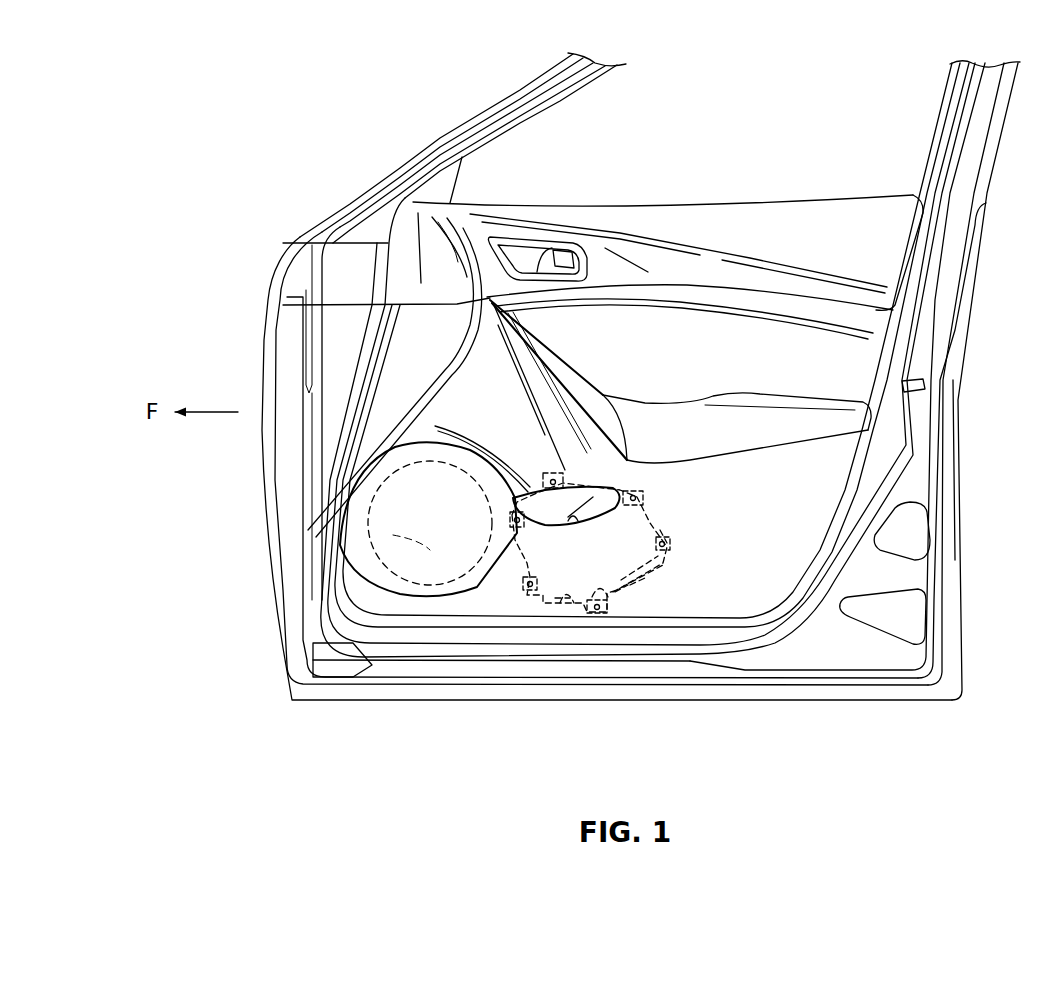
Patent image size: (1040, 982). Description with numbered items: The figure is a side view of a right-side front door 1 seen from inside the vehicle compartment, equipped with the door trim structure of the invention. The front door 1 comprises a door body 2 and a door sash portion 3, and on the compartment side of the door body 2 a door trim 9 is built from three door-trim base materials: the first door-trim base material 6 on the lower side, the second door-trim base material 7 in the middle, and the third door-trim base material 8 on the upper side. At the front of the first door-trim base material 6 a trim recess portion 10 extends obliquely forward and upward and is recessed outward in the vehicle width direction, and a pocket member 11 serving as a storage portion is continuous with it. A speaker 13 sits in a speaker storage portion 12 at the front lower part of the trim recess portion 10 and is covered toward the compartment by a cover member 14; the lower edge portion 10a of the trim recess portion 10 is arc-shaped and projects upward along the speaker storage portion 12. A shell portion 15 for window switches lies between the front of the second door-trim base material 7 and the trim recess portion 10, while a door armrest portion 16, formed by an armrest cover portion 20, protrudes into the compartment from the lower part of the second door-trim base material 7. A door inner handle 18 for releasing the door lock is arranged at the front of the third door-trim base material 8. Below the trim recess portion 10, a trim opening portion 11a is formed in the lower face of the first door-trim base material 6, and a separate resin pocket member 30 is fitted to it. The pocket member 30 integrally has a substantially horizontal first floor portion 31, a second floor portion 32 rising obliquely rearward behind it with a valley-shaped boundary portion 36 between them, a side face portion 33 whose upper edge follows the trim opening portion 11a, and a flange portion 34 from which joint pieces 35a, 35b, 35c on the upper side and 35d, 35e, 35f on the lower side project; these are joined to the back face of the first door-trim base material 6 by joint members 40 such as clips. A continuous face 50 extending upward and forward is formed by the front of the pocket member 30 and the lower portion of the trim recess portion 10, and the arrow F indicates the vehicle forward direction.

The front door 1 is at (247, 290).
The door body 2 is at (262, 510).
The door sash portion 3 is at (500, 95).
The first door-trim base material 6 is at (738, 570).
The second door-trim base material 7 is at (708, 350).
The third door-trim base material 8 is at (812, 245).
The door trim 9 is at (755, 198).
The trim recess portion 10 is at (485, 411).
The lower edge portion 10a is at (460, 423).
The pocket member 11 is at (568, 505).
The trim opening portion 11a is at (577, 524).
The speaker storage portion 12 is at (480, 578).
The speaker 13 is at (393, 535).
The cover member 14 is at (409, 539).
The shell portion 15 is at (557, 342).
The door armrest portion 16 is at (813, 393).
The door inner handle 18 is at (538, 243).
The armrest cover portion 20 is at (763, 450).
The pocket member 30 is at (650, 580).
The first floor portion 31 is at (565, 604).
The second floor portion 32 is at (637, 583).
The side face portion 33 is at (598, 497).
The flange portion 34 is at (670, 572).
The joint piece 35a is at (548, 473).
The joint piece 35b is at (510, 523).
The joint piece 35c is at (643, 497).
The joint piece 35d is at (520, 585).
The joint piece 35e is at (672, 545).
The joint piece 35f is at (597, 617).
The boundary portion 36 is at (623, 593).
The joint member 40 is at (667, 527).
The continuous face 50 is at (474, 444).